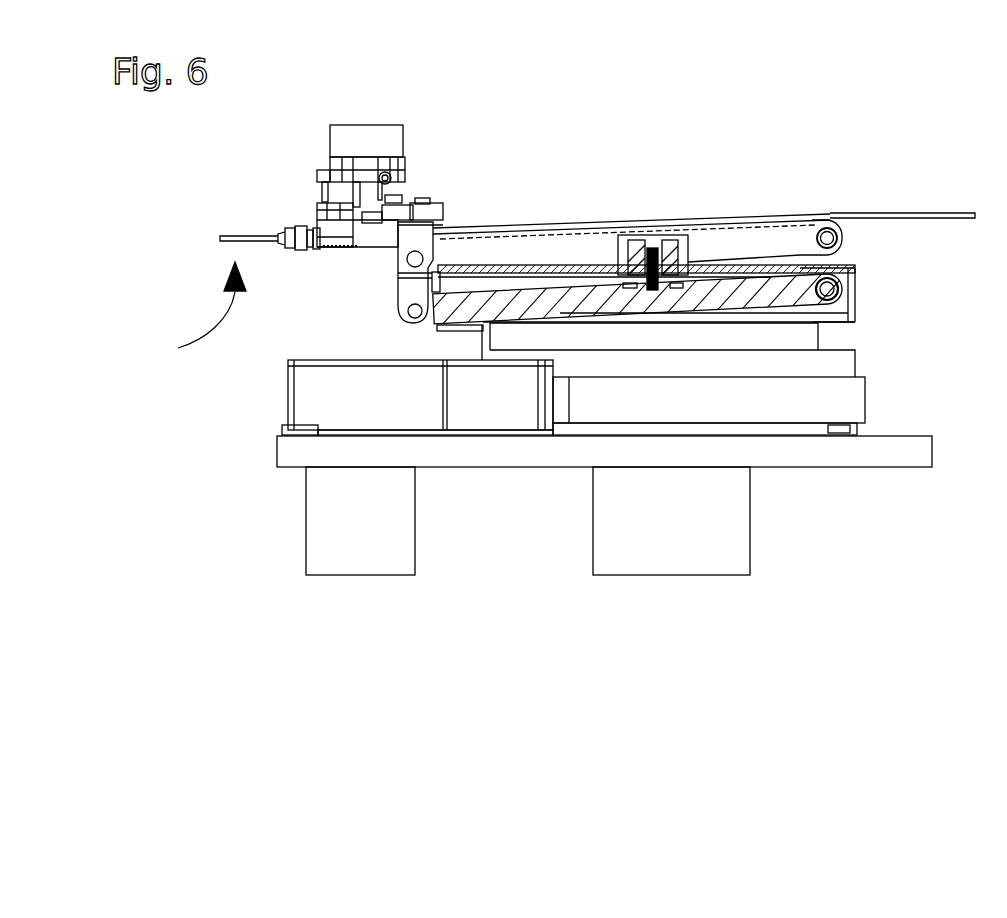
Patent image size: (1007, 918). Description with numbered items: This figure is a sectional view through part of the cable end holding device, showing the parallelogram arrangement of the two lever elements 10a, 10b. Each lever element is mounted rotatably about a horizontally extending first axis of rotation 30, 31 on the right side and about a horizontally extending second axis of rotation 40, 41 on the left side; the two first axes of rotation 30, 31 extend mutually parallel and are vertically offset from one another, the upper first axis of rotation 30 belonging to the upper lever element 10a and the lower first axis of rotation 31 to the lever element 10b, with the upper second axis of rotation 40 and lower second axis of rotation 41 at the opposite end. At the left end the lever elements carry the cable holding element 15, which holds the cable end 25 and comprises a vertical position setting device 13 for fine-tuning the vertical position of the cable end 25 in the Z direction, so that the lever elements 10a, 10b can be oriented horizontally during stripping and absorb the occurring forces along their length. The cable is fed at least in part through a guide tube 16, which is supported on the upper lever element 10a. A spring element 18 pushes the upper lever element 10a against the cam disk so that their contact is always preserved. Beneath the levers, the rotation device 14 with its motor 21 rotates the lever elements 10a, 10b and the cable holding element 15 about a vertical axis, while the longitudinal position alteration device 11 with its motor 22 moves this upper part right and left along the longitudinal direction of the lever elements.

The upper lever element 10a is at (763, 233).
The lever element 10b is at (772, 283).
The longitudinal position alteration device 11 is at (856, 272).
The vertical position setting device 13 is at (423, 203).
The rotation device 14 is at (823, 413).
The cable holding element 15 is at (340, 238).
The guide tube 16 is at (940, 215).
The spring element 18 is at (655, 250).
The motor 21 is at (388, 568).
The motor 22 is at (673, 565).
The cable end 25 is at (205, 332).
The upper first axis of rotation 30 is at (826, 228).
The lower first axis of rotation 31 is at (838, 291).
The upper second axis of rotation 40 is at (418, 252).
The lower second axis of rotation 41 is at (407, 312).